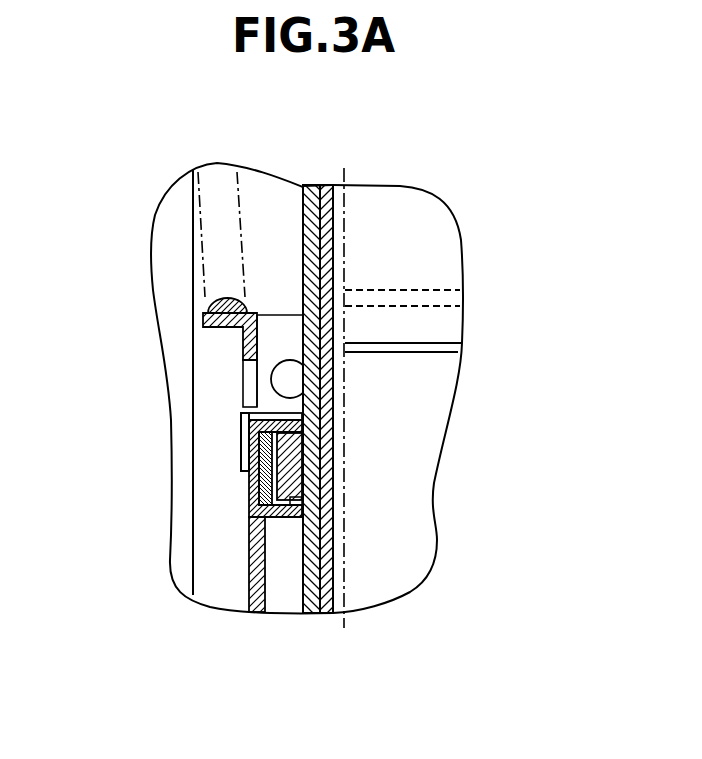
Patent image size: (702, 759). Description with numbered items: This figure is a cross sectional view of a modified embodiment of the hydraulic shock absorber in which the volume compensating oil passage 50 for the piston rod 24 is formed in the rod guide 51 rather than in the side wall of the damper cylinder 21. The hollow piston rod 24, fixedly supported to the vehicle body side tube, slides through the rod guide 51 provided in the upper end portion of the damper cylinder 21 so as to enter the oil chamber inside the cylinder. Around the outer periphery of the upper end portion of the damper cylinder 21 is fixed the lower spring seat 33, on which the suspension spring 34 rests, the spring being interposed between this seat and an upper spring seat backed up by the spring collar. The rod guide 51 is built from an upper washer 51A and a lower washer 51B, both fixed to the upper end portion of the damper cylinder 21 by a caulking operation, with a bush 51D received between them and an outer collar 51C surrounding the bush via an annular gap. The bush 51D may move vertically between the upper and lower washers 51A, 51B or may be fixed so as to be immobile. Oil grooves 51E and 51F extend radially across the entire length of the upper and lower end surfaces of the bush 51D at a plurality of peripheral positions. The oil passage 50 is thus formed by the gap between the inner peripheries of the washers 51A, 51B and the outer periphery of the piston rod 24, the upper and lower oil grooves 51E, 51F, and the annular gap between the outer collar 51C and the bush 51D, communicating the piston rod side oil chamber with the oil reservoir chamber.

The damper cylinder 21 is at (247, 593).
The piston rod 24 is at (313, 230).
The lower spring seat 33 is at (243, 345).
The suspension spring 34 is at (207, 306).
The oil passage 50 is at (242, 452).
The rod guide 51 is at (247, 497).
The upper washer 51A is at (283, 417).
The lower washer 51B is at (278, 517).
The outer collar 51C is at (247, 478).
The bush 51D is at (302, 467).
The upper oil groove 51E is at (305, 440).
The lower oil groove 51F is at (302, 500).